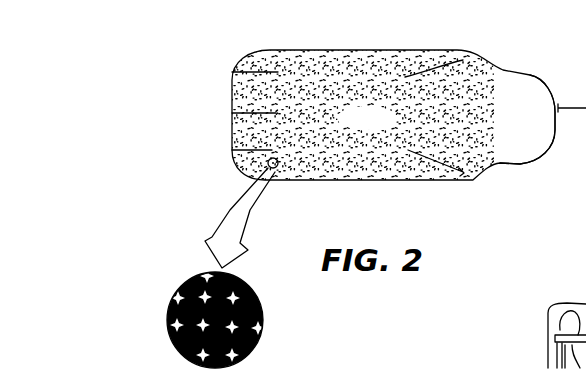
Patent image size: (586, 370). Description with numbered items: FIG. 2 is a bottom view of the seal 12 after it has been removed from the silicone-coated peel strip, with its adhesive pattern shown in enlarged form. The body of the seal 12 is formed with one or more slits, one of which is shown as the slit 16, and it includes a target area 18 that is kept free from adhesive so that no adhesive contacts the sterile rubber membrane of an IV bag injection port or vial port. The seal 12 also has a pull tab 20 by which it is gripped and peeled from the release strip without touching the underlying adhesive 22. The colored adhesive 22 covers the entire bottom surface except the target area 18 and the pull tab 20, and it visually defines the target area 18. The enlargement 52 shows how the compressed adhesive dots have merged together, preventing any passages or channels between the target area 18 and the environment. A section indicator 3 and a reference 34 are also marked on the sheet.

The seal 12 is at (373, 50).
The slit 16 is at (433, 67).
The target area 18 is at (358, 107).
The pull tab 20 is at (533, 73).
The adhesive 22 is at (318, 67).
The fastener 34 is at (570, 315).
The enlargement 52 is at (264, 326).
The section line 3- 3 is at (232, 113).